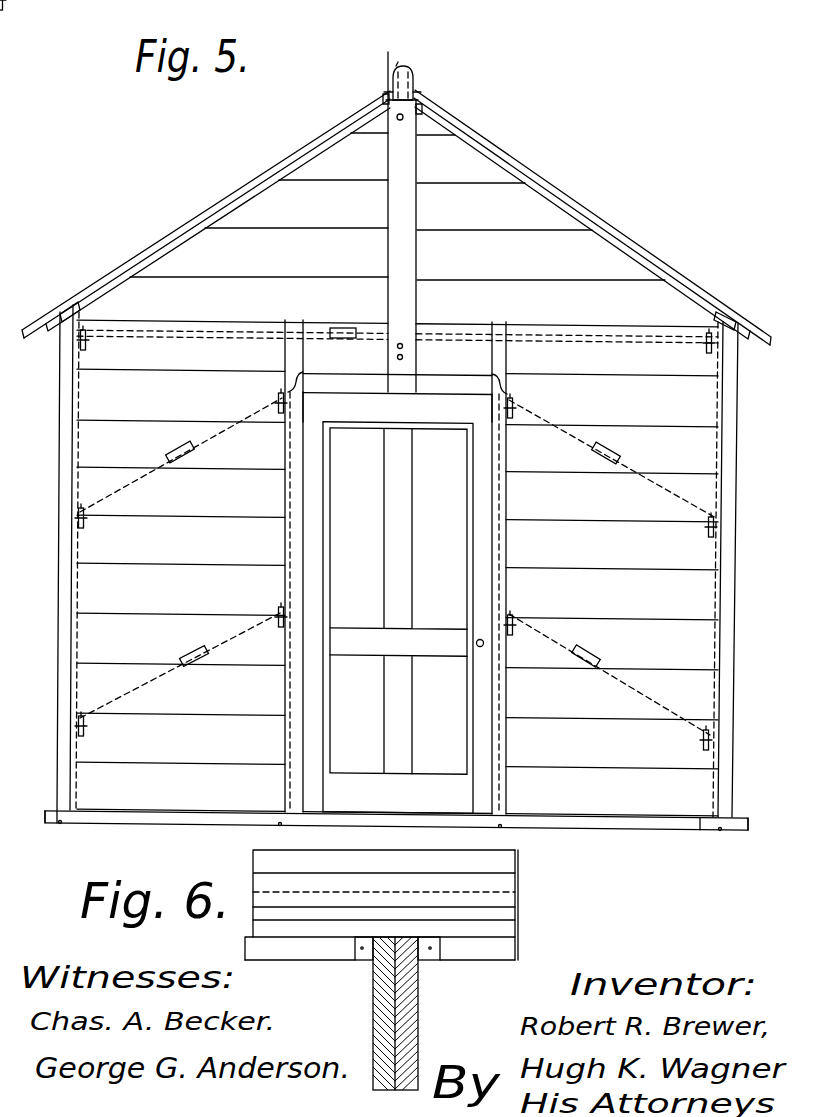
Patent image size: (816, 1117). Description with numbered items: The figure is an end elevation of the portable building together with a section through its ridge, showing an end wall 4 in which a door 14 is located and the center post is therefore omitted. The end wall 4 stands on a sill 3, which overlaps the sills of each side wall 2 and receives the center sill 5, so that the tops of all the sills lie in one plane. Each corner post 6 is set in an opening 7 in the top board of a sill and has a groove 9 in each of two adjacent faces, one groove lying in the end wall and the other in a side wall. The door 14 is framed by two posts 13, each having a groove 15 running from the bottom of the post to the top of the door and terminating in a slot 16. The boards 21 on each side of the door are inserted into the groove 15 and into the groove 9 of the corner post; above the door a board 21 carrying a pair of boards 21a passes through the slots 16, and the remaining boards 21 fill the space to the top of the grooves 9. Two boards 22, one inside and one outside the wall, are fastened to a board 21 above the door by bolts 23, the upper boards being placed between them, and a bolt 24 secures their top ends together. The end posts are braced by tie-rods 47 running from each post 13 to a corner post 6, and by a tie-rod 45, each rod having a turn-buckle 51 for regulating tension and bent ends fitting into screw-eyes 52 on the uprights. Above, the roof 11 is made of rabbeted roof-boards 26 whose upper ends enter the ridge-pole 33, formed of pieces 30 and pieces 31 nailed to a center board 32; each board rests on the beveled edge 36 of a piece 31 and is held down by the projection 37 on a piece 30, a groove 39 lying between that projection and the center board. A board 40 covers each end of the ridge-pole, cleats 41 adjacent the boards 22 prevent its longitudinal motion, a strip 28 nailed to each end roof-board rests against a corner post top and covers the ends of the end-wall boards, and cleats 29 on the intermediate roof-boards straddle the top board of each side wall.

In FIG. 5, the side wall 2 is at (55, 810).
In FIG. 5, the sill 3 is at (155, 824).
In FIG. 5, the end wall 4 is at (541, 219).
In FIG. 5, the center sill 5 is at (405, 811).
In FIG. 5, the corner post 6 is at (380, 65).
In FIG. 5, the opening 7 is at (60, 824).
In FIG. 5, the groove 9 is at (78, 583).
In FIG. 5, the roof 11 is at (198, 212).
In FIG. 5, the post 13 is at (305, 796).
In FIG. 5, the door 14 is at (403, 618).
In FIG. 5, the groove 15 is at (287, 690).
In FIG. 5, the slot 16 is at (299, 378).
In FIG. 5, the board 21 is at (397, 474).
In FIG. 6, the board 21 is at (412, 1031).
In FIG. 5, the board 21a is at (360, 380).
In FIG. 5, the board 22 is at (418, 255).
In FIG. 6, the board 22 is at (400, 1012).
In FIG. 5, the bolt 23 is at (410, 355).
In FIG. 5, the bolt 24 is at (398, 120).
In FIG. 5, the roof-board 26 is at (283, 184).
In FIG. 5, the strip of wood 28 is at (52, 331).
In FIG. 5, the cleat 29 is at (78, 306).
In FIG. 5, the piece 30 is at (395, 70).
In FIG. 6, the piece 30 is at (384, 893).
In FIG. 5, the piece 31 is at (388, 92).
In FIG. 6, the piece 31 is at (346, 950).
In FIG. 5, the center board 32 is at (405, 66).
In FIG. 5, the ridge-pole 33 is at (398, 62).
In FIG. 6, the ridge-pole 33 is at (288, 905).
In FIG. 6, the beveled edge 36 is at (318, 927).
In FIG. 6, the projection 37 is at (305, 900).
In FIG. 6, the groove 39 is at (380, 892).
In FIG. 5, the board 40 is at (390, 82).
In FIG. 6, the board 40 is at (519, 888).
In FIG. 5, the cleat 41 is at (386, 97).
In FIG. 6, the cleat 41 is at (368, 965).
In FIG. 5, the tie-rod 45 is at (197, 328).
In FIG. 5, the tie-rod 47 is at (218, 435).
In FIG. 5, the turn-buckle 51 is at (345, 328).
In FIG. 5, the screw-eye 52 is at (87, 350).